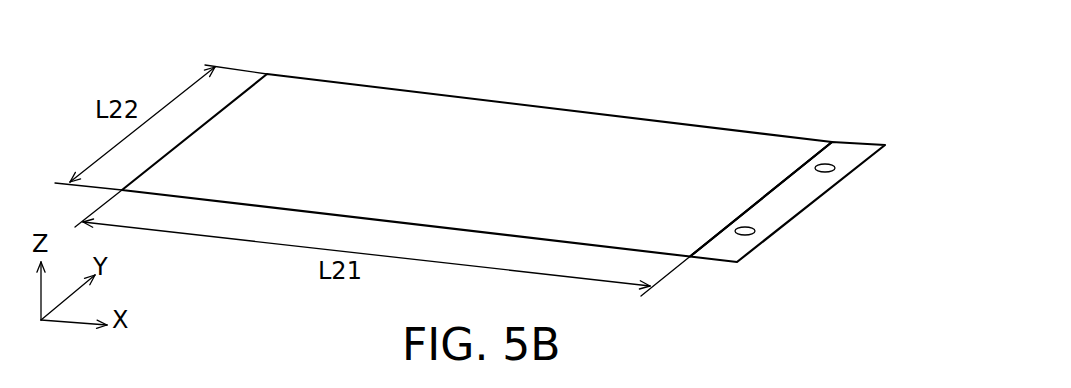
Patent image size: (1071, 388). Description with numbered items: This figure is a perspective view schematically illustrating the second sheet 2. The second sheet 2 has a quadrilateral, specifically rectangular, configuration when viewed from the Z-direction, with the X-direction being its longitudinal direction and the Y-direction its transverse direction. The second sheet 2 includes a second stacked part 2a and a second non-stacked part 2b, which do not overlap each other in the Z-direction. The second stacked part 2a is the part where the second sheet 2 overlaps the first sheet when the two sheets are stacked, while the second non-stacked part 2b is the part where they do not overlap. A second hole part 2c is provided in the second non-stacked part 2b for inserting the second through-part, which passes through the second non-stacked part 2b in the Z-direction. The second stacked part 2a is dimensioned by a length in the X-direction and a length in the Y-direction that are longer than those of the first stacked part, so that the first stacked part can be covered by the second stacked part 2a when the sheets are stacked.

The second sheet 2 is at (503, 146).
The second stacked part 2a is at (504, 122).
The second non-stacked part 2b is at (787, 165).
The second hole part 2c is at (754, 228).